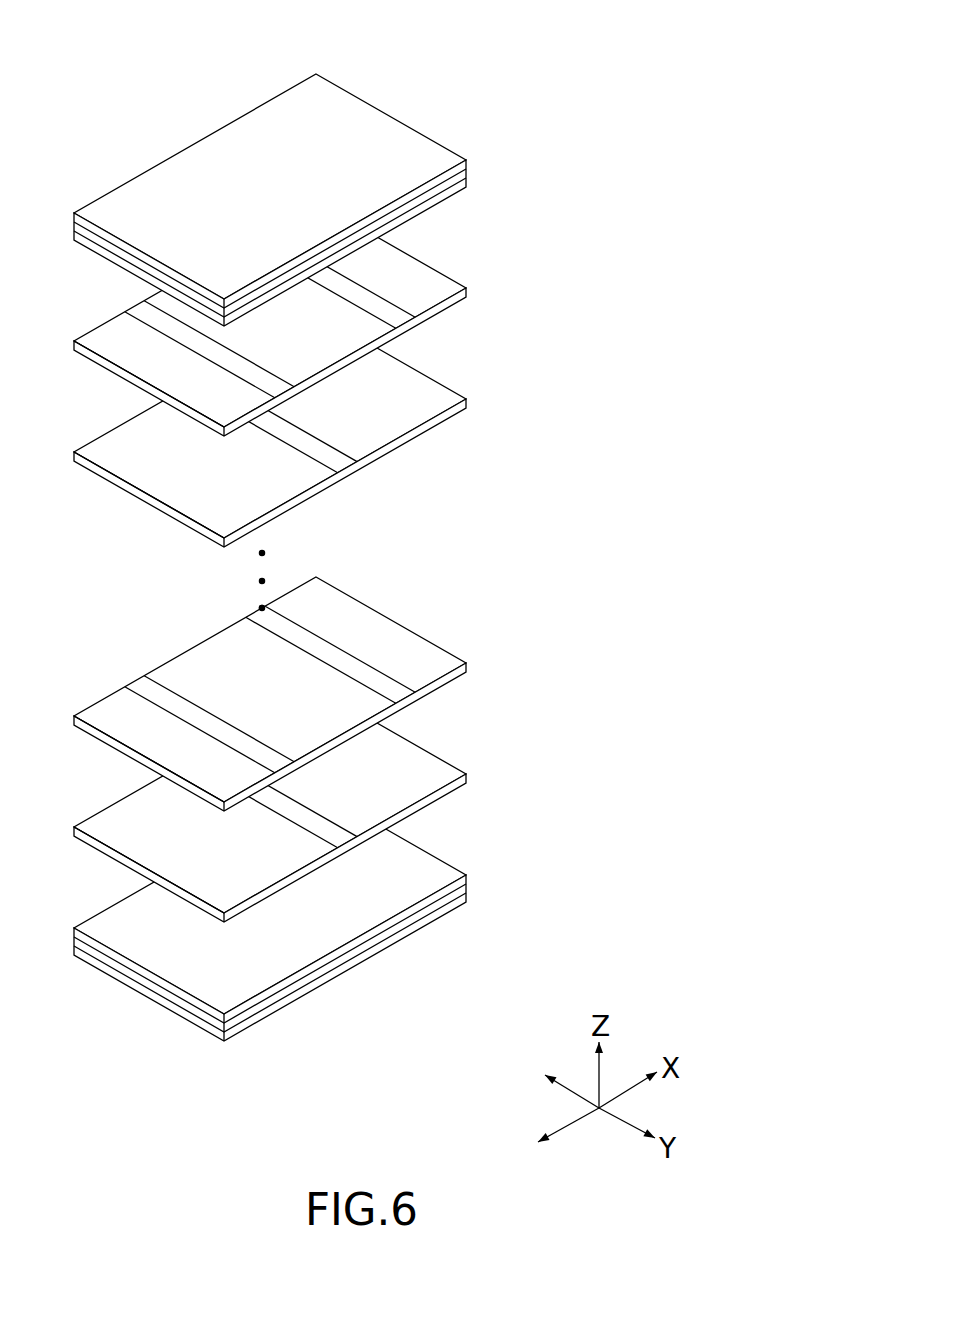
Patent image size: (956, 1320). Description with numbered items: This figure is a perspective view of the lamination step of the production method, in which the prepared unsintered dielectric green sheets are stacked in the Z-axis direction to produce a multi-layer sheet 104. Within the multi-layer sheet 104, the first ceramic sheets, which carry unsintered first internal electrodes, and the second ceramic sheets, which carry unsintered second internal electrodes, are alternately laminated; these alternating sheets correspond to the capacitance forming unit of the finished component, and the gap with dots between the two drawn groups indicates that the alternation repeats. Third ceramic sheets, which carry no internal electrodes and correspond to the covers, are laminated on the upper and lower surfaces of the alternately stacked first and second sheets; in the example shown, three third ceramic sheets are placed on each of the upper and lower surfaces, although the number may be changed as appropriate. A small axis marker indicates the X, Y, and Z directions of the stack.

The multi-layer sheet 104 is at (421, 78).